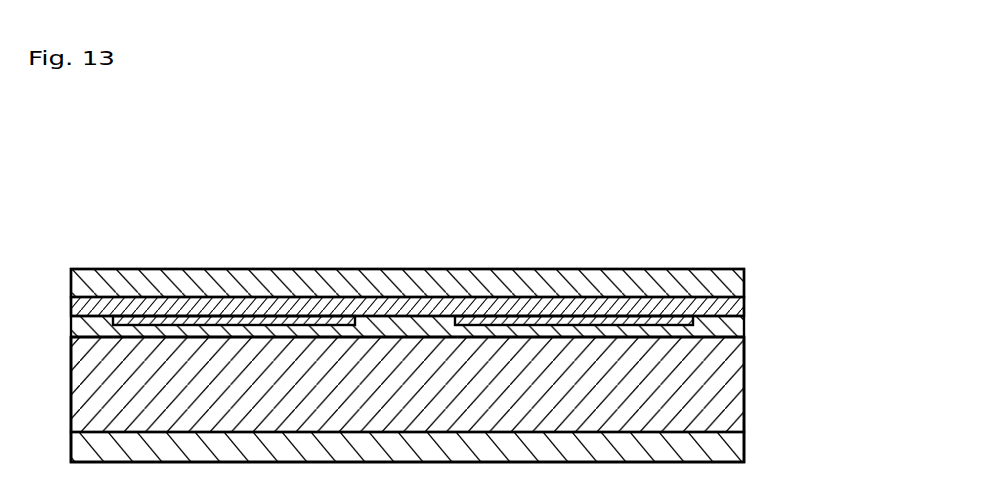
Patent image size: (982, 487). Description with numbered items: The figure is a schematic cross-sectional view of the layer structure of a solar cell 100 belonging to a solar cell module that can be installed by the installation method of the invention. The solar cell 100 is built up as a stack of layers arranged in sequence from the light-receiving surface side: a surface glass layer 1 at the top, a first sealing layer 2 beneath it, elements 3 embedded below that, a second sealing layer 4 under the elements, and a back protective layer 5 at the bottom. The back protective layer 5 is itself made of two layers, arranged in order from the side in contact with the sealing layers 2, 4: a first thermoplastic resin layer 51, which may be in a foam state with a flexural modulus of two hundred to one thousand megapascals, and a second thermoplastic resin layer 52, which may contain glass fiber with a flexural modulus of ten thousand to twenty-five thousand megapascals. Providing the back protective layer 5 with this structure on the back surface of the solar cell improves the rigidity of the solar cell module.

The solar cell 100 is at (783, 197).
The surface glass layer 1 is at (688, 270).
The first sealing layer 2 is at (628, 302).
The elements 3 is at (243, 318).
The second sealing layer 4 is at (716, 326).
The back protective layer 5 is at (832, 385).
The first thermoplastic resin layer 51 is at (720, 399).
The second thermoplastic resin layer 52 is at (724, 446).